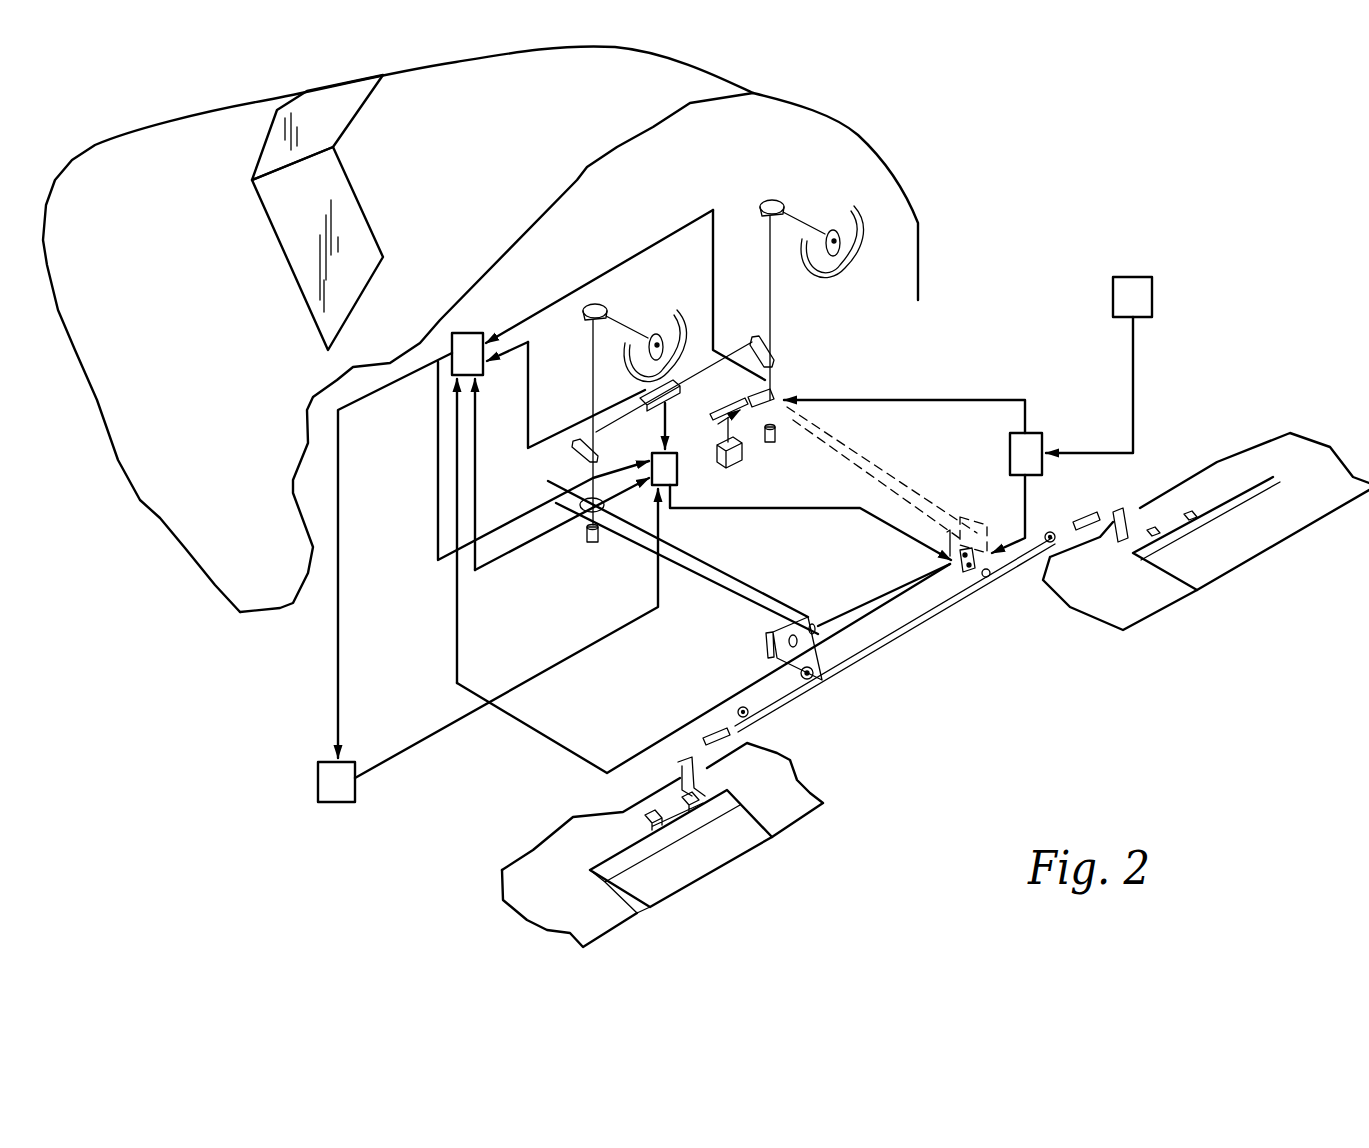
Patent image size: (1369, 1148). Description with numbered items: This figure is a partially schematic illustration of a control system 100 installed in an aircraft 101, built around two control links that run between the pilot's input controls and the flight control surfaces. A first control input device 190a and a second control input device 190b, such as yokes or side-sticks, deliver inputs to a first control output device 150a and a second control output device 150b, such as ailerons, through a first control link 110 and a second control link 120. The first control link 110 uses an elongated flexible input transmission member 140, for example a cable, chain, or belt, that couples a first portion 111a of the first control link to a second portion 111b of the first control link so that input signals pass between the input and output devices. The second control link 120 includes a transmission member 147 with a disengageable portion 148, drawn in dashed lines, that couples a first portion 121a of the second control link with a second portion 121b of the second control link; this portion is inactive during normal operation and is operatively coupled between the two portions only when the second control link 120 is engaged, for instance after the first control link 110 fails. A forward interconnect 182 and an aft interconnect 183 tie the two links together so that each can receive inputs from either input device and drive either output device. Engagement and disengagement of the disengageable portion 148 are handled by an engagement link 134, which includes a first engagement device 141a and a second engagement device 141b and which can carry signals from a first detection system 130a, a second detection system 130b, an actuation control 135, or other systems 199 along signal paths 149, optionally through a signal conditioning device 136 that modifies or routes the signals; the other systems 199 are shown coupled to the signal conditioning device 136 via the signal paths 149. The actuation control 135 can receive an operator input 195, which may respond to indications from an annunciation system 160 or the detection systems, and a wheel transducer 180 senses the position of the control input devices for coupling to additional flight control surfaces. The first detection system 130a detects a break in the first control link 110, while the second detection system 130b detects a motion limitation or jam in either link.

The control system 100 is at (590, 205).
The aircraft 101 is at (197, 525).
The first control link 110 is at (582, 406).
The first portion of the first control link 111a is at (512, 305).
The second portion of the first control link 111b is at (810, 710).
The second control link 120 is at (790, 314).
The first portion of the second control link 121a is at (790, 288).
The second portion of the second control link 121b is at (1026, 580).
The first detection system 130a is at (580, 502).
The second detection system 130b is at (640, 398).
The engagement link 134 is at (771, 523).
The actuation control 135 is at (1042, 436).
The signal conditioning device 136 is at (678, 472).
The elongated flexible input transmission member 140 is at (723, 590).
The first engagement device 141a is at (775, 397).
The second engagement device 141b is at (967, 575).
The transmission member 147 is at (948, 470).
The disengageable portion 148 is at (887, 462).
The signal paths 149 is at (522, 322).
The first control output device 150a is at (760, 870).
The second control output device 150b is at (1245, 582).
The annunciation system 160 is at (453, 333).
The wheel transducer 180 is at (593, 543).
The forward interconnect 182 is at (688, 362).
The aft interconnect 183 is at (855, 612).
The first control input device 190a is at (660, 335).
The second control input device 190b is at (843, 237).
The operator input 195 is at (1152, 295).
The other systems 199 is at (316, 782).